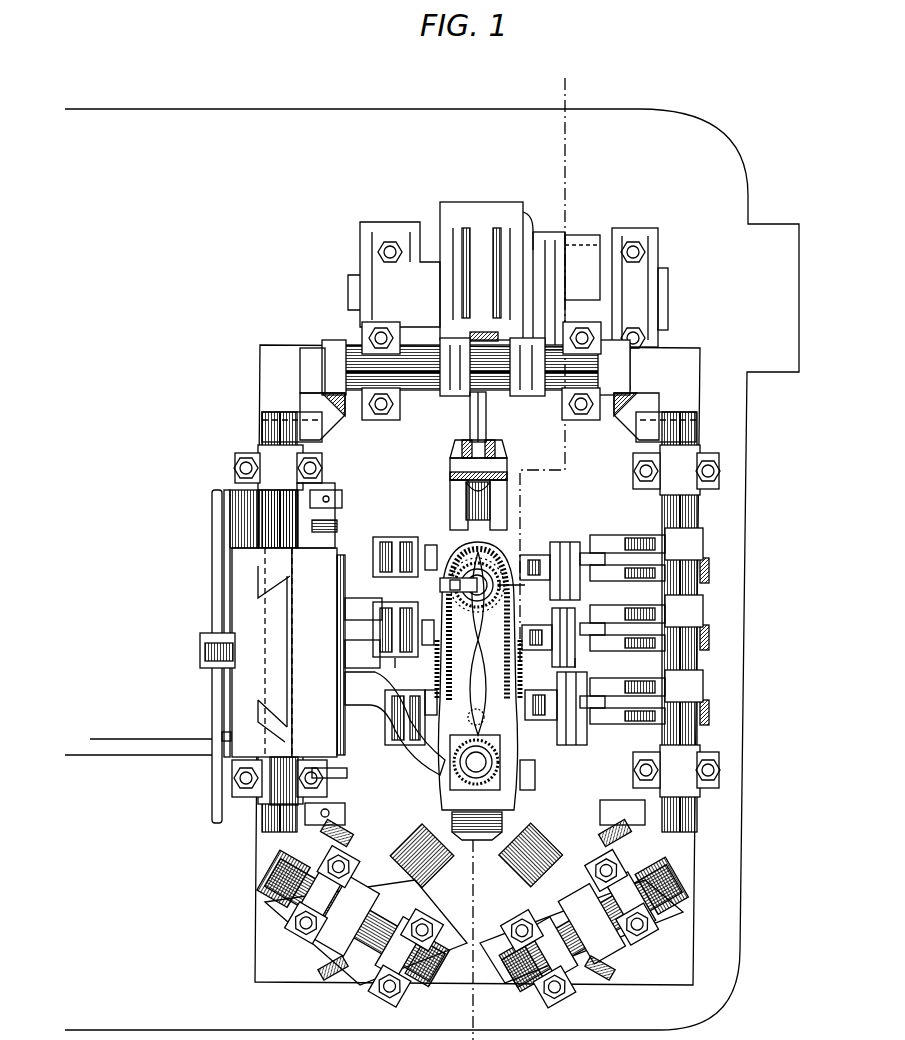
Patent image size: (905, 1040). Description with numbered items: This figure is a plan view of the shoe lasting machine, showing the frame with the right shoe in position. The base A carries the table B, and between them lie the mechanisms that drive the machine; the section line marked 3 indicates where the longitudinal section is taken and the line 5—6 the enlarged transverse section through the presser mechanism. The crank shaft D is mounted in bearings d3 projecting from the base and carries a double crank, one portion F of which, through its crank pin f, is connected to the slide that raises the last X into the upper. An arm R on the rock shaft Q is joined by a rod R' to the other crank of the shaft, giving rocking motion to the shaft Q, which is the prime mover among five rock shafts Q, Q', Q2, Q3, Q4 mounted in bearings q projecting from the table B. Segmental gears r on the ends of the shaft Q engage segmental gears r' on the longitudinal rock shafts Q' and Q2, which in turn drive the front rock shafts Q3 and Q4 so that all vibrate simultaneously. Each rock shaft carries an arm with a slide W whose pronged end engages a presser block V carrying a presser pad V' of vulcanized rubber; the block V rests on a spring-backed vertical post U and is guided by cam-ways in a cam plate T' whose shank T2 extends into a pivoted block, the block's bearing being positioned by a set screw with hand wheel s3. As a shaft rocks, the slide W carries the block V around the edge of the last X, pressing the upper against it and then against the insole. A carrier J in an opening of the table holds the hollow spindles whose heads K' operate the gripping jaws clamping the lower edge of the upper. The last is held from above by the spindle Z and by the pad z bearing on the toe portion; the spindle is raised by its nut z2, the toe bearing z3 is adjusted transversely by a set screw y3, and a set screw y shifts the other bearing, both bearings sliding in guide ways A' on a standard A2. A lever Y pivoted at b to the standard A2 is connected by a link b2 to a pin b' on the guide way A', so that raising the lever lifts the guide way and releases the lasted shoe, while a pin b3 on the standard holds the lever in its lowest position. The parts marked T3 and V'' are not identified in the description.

The base A is at (432, 569).
The table B is at (477, 665).
The section line 3—4 3 is at (522, 88).
The section line 5—6 5 is at (395, 663).
The section line 5— 6 is at (580, 663).
The crank shaft D is at (358, 292).
The bearings d3 is at (525, 288).
The crank F is at (520, 196).
The crank pin f is at (528, 229).
The arm R is at (549, 291).
The rod R' is at (582, 266).
The hand wheel s3 is at (597, 520).
The rock shaft Q is at (477, 367).
The bearings q is at (392, 404).
The segmental gears r is at (479, 416).
The segmental gears r' is at (479, 427).
The longitudinal rock shaft Q' is at (279, 612).
The longitudinal rock shaft Q2 is at (690, 412).
The slide W is at (520, 726).
The cam plate T' is at (622, 629).
The presser pad V' is at (505, 601).
The presser block V is at (524, 556).
The vertical post U is at (466, 500).
The last X is at (477, 691).
The carrier J is at (445, 545).
The spindle Z is at (482, 671).
The pad z is at (476, 749).
The head K' is at (461, 664).
The standard A2 is at (262, 652).
The guide ways A' is at (316, 652).
The lever Y is at (212, 600).
The pivot b is at (227, 623).
The pin b' is at (204, 650).
The link b2 is at (215, 660).
The pin b3 is at (231, 737).
The set screw y is at (320, 527).
The set screw y3 is at (345, 762).
The nut z2 is at (362, 596).
The bearing z3 is at (393, 707).
The shank T2 is at (305, 826).
The bevel gear T3 is at (476, 837).
The rock shaft Q3 is at (354, 920).
The rock shaft Q4 is at (590, 922).
The tool holder V'' is at (476, 855).